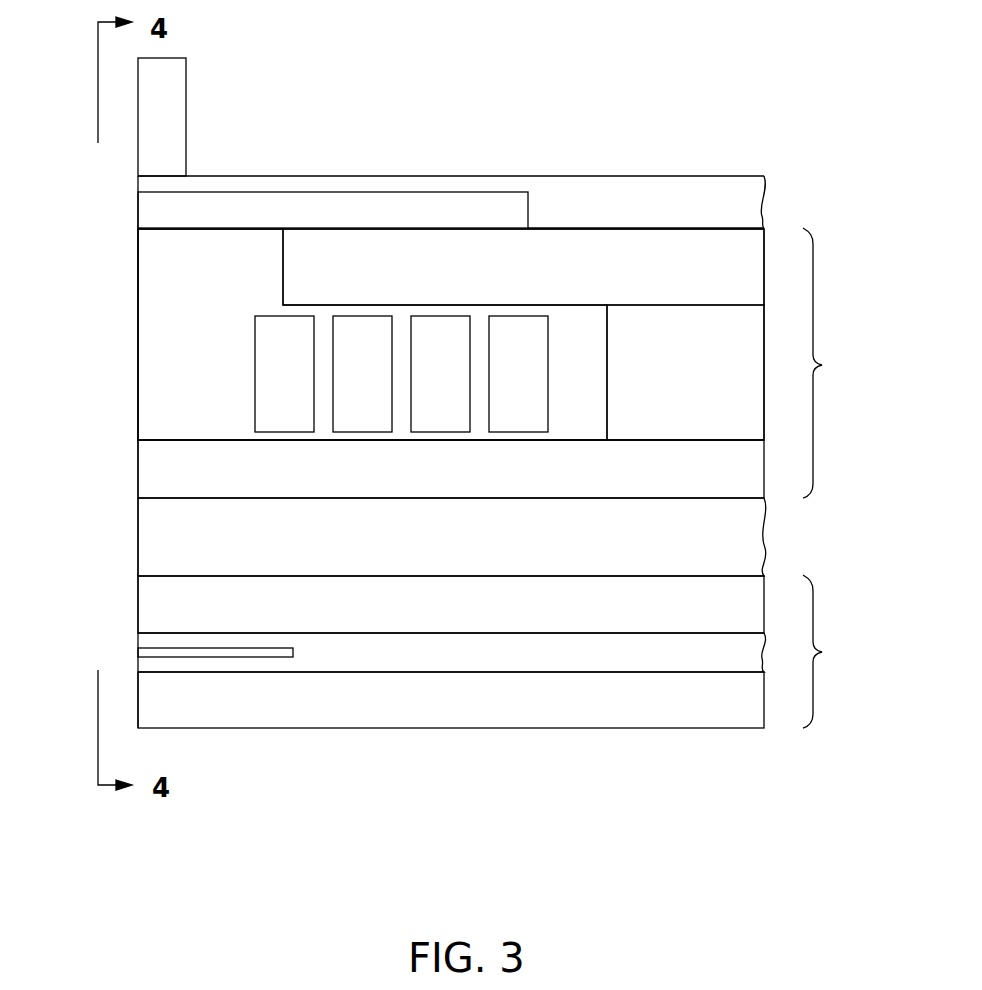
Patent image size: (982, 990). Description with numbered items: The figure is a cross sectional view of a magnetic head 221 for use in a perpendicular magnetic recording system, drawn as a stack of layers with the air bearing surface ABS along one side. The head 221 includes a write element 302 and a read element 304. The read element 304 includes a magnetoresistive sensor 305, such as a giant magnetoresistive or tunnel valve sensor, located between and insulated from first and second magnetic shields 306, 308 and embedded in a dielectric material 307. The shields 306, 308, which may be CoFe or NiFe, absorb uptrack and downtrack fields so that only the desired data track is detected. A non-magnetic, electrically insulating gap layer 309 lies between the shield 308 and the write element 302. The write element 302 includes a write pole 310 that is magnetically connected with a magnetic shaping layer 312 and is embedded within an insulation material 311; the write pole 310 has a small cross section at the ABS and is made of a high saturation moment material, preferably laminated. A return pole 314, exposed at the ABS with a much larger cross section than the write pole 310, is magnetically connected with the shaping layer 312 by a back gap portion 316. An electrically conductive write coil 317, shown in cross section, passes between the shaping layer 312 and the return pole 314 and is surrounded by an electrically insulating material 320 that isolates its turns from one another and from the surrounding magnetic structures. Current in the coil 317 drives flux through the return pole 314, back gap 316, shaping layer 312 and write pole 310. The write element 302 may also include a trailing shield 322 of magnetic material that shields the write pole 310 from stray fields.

The magnetic head 221 is at (492, 96).
The write element 302 is at (817, 266).
The read element 304 is at (815, 583).
The magnetoresistive sensor 305 is at (293, 652).
The first magnetic shield 306 is at (381, 698).
The dielectric material 307 is at (636, 652).
The second magnetic shield 308 is at (382, 606).
The gap layer 309 is at (400, 538).
The write pole 310 is at (231, 211).
The insulation material 311 is at (642, 207).
The magnetic shaping layer 312 is at (390, 267).
The return pole 314 is at (392, 472).
The back gap portion 316 is at (137, 285).
The write coil 317 is at (304, 370).
The electrically insulating material 320 is at (235, 267).
The trailing shield 322 is at (172, 135).
The air bearing surface ABS is at (137, 535).